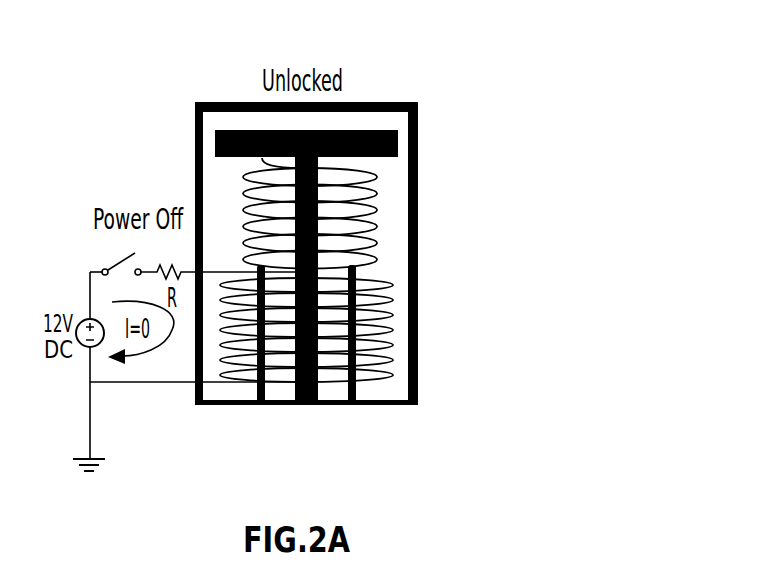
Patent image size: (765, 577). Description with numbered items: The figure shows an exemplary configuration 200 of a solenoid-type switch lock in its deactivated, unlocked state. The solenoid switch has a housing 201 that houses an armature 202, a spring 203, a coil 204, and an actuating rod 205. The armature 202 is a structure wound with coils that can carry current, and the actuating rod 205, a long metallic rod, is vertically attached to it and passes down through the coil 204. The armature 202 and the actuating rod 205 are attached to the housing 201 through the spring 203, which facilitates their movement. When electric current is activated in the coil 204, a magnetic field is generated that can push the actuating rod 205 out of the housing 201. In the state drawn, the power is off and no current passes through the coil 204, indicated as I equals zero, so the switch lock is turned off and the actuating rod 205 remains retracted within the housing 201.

The configuration 200 is at (335, 21).
The housing 201 is at (403, 102).
The armature 202 is at (398, 149).
The spring 203 is at (378, 221).
The coil 204 is at (392, 318).
The actuating rod 205 is at (306, 405).